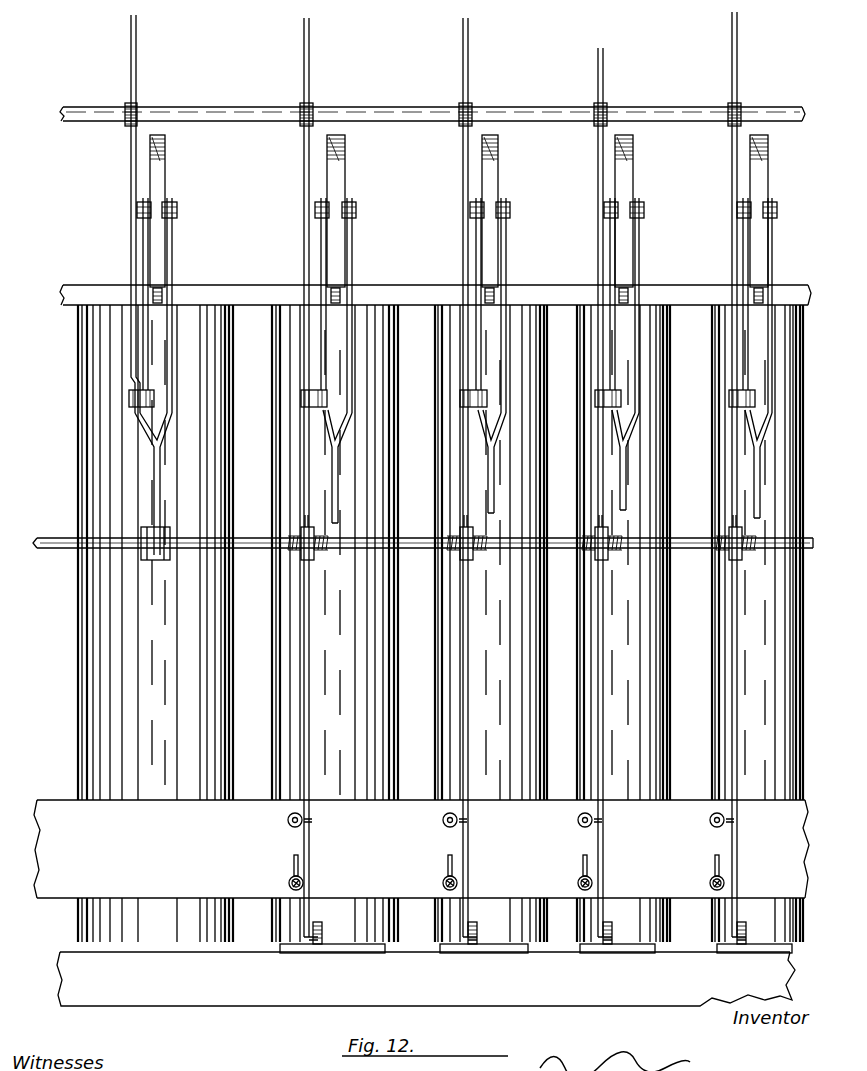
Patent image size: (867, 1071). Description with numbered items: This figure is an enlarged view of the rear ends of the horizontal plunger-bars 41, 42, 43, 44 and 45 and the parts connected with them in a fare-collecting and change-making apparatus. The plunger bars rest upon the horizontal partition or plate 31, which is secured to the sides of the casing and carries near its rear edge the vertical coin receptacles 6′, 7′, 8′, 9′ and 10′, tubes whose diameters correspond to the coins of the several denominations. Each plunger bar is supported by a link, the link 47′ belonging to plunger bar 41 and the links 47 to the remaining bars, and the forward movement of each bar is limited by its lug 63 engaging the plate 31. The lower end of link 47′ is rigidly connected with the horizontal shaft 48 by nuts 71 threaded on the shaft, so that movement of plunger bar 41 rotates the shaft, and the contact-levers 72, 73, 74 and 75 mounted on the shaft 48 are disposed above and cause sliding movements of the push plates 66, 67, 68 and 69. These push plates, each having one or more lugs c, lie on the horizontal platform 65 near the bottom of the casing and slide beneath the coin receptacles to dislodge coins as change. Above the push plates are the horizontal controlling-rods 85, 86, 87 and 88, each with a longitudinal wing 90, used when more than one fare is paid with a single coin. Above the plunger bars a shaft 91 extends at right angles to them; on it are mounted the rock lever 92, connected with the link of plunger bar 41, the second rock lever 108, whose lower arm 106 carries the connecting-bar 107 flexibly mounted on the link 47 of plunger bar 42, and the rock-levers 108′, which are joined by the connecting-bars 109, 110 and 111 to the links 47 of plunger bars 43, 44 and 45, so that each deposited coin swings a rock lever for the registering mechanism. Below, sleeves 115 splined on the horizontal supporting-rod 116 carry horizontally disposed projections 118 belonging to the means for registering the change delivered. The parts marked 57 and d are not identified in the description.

The coin receptacle 6′ is at (78, 450).
The coin receptacle 7′ is at (272, 460).
The coin receptacle 8′ is at (450, 478).
The coin receptacle 9′ is at (580, 466).
The coin receptacle 10′ is at (718, 452).
The horizontal partition or plate 31 is at (408, 288).
The plunger-bar 41 is at (166, 184).
The plunger-bar 42 is at (345, 182).
The plunger-bar 43 is at (498, 182).
The plunger-bar 44 is at (633, 180).
The plunger-bar 45 is at (768, 180).
The link 47 is at (772, 256).
The link 47′ is at (172, 252).
The shaft 48 is at (64, 550).
The plunger head 57 is at (635, 148).
The lug 63 is at (163, 293).
The horizontal platform 65 is at (57, 1006).
The push plate 66 is at (355, 953).
The push plate 67 is at (508, 953).
The push plate 68 is at (638, 953).
The push plate 69 is at (762, 953).
The nut 71 is at (164, 560).
The contact-lever 72 is at (310, 688).
The contact-lever 73 is at (469, 642).
The contact-lever 74 is at (604, 698).
The contact-lever 75 is at (736, 620).
The controlling-rod 85 is at (289, 884).
The controlling-rod 86 is at (443, 884).
The controlling-rod 87 is at (578, 884).
The controlling-rod 88 is at (710, 884).
The longitudinal wing 90 is at (293, 860).
The shaft 91 is at (255, 107).
The rock lever 92 is at (138, 105).
The lower arm 106 is at (304, 358).
The connecting-bar 107 is at (320, 410).
The rock lever 108 is at (313, 106).
The rock-lever 108′ is at (742, 102).
The connecting-bar 109 is at (472, 412).
The connecting-bar 110 is at (607, 412).
The connecting-bar 111 is at (747, 412).
The sleeve 115 is at (288, 818).
The supporting-rod 116 is at (288, 822).
The projection 118 is at (312, 822).
The lug c is at (320, 925).
The plate d is at (333, 953).